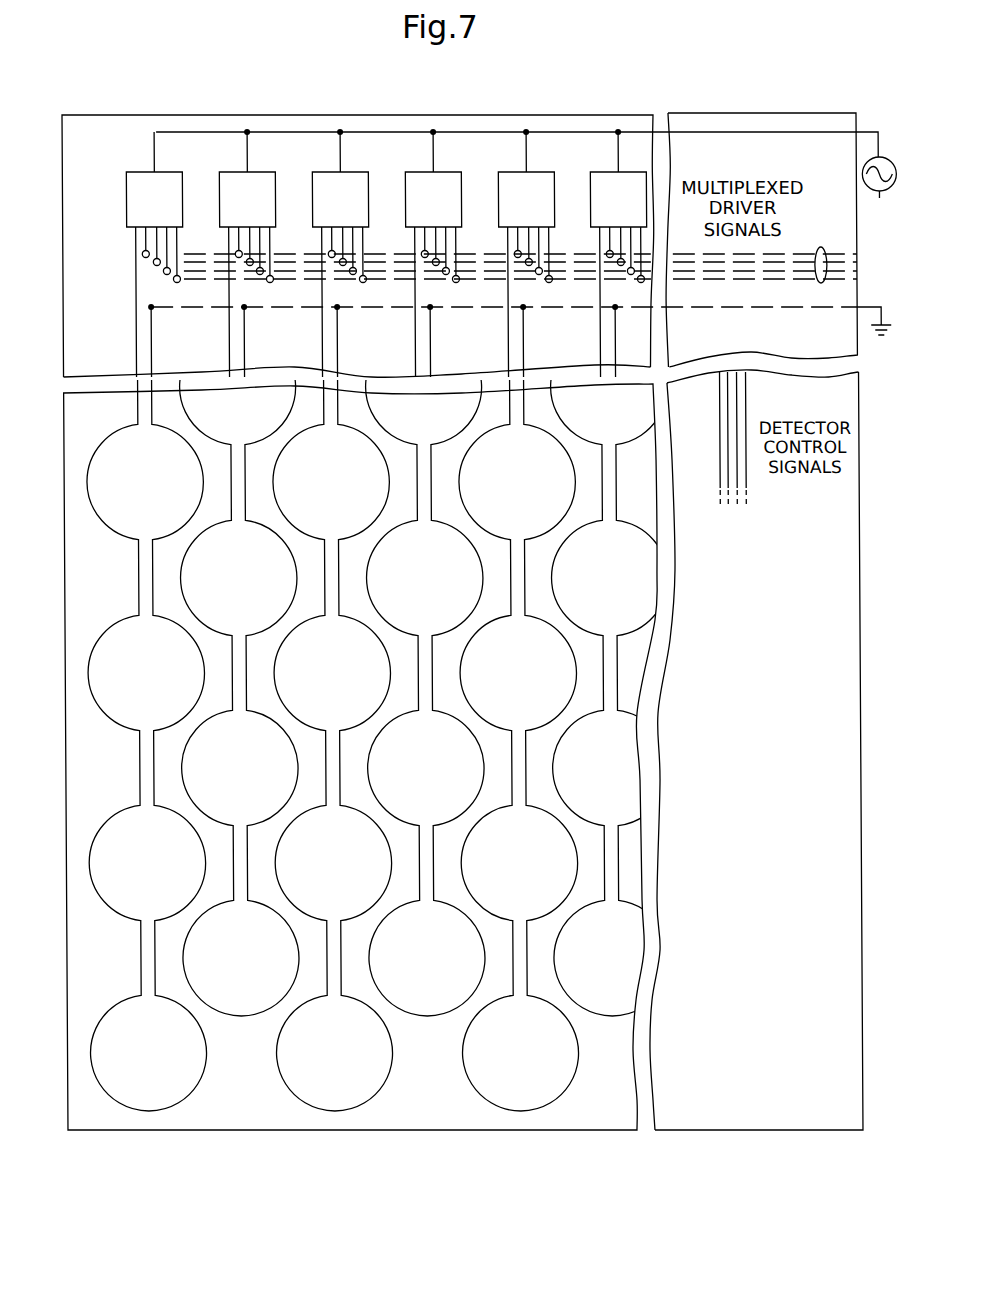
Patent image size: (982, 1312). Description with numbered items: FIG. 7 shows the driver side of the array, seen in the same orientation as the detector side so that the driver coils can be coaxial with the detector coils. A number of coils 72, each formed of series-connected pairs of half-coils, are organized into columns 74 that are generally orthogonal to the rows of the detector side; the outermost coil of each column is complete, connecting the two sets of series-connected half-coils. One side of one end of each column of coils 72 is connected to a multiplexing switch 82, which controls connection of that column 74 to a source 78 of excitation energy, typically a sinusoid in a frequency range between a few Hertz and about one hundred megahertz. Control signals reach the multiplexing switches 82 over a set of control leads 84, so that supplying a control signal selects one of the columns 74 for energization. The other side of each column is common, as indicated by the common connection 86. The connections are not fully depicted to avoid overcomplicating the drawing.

The coils 72 is at (117, 918).
The columns 74 is at (378, 744).
The source of excitation energy 78 is at (526, 176).
The multiplexing switches 82 is at (228, 172).
The control leads 84 is at (820, 247).
The common connection 86 is at (887, 322).